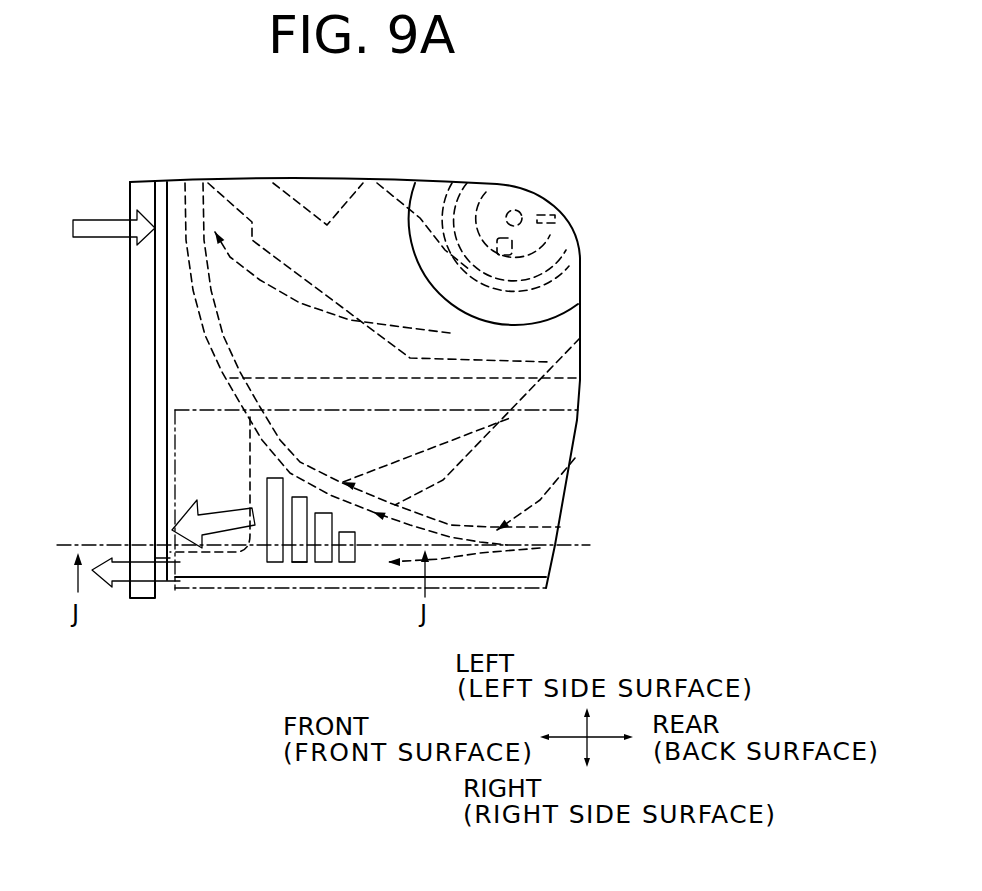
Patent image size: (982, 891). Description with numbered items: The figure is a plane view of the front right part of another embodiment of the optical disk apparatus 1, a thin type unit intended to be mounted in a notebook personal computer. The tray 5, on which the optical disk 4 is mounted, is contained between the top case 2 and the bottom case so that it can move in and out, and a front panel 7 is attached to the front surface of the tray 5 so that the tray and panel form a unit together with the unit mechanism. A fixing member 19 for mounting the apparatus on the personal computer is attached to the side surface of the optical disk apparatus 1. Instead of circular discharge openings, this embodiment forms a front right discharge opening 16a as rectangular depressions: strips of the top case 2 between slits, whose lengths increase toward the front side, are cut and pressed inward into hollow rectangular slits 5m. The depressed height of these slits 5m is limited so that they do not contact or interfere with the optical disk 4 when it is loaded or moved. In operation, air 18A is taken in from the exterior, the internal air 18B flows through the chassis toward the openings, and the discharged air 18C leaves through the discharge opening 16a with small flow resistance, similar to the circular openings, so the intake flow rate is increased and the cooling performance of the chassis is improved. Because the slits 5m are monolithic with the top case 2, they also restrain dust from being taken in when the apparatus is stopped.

The optical disk apparatus 1 is at (335, 170).
The top case 2 is at (477, 565).
The optical disk 4 is at (255, 193).
The tray 5 is at (185, 367).
The hollow rectangular slits 5m is at (277, 480).
The front panel 7 is at (142, 330).
The front right discharge opening 16a is at (297, 562).
The taken-in air 18A is at (95, 228).
The internal air 18B is at (488, 447).
The discharged air 18C is at (194, 533).
The fixing member 19 is at (377, 580).